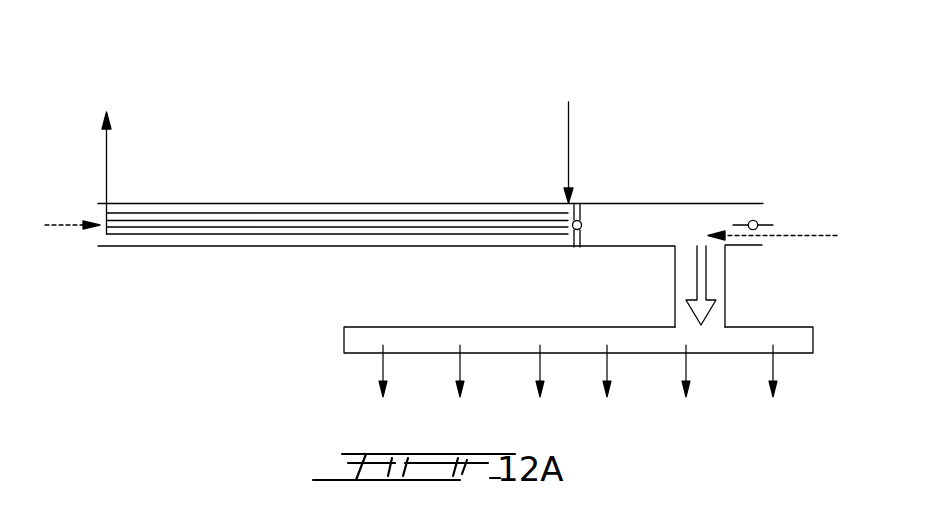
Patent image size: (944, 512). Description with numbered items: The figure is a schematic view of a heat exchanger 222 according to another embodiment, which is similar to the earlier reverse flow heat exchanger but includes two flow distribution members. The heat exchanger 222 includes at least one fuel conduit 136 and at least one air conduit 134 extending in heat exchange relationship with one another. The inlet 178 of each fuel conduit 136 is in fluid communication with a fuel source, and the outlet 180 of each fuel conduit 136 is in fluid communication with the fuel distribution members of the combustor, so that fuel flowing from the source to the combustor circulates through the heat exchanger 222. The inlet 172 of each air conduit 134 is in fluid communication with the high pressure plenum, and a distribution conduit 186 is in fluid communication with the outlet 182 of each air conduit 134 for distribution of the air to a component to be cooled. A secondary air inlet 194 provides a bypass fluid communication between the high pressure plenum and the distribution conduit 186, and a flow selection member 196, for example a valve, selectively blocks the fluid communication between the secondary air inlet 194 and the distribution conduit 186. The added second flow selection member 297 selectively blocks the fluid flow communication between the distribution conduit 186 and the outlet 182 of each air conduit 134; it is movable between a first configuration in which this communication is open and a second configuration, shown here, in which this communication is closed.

The heat exchanger 222 is at (338, 116).
The outlet 180 is at (105, 156).
The air conduit 134 is at (218, 220).
The fuel conduit 136 is at (280, 222).
The inlet 172 is at (60, 226).
The inlet 178 is at (568, 132).
The outlet 182 is at (573, 240).
The second flow selection member 297 is at (583, 236).
The flow selection member 196 is at (770, 223).
The secondary air inlet 194 is at (748, 238).
The distribution conduit 186 is at (344, 338).